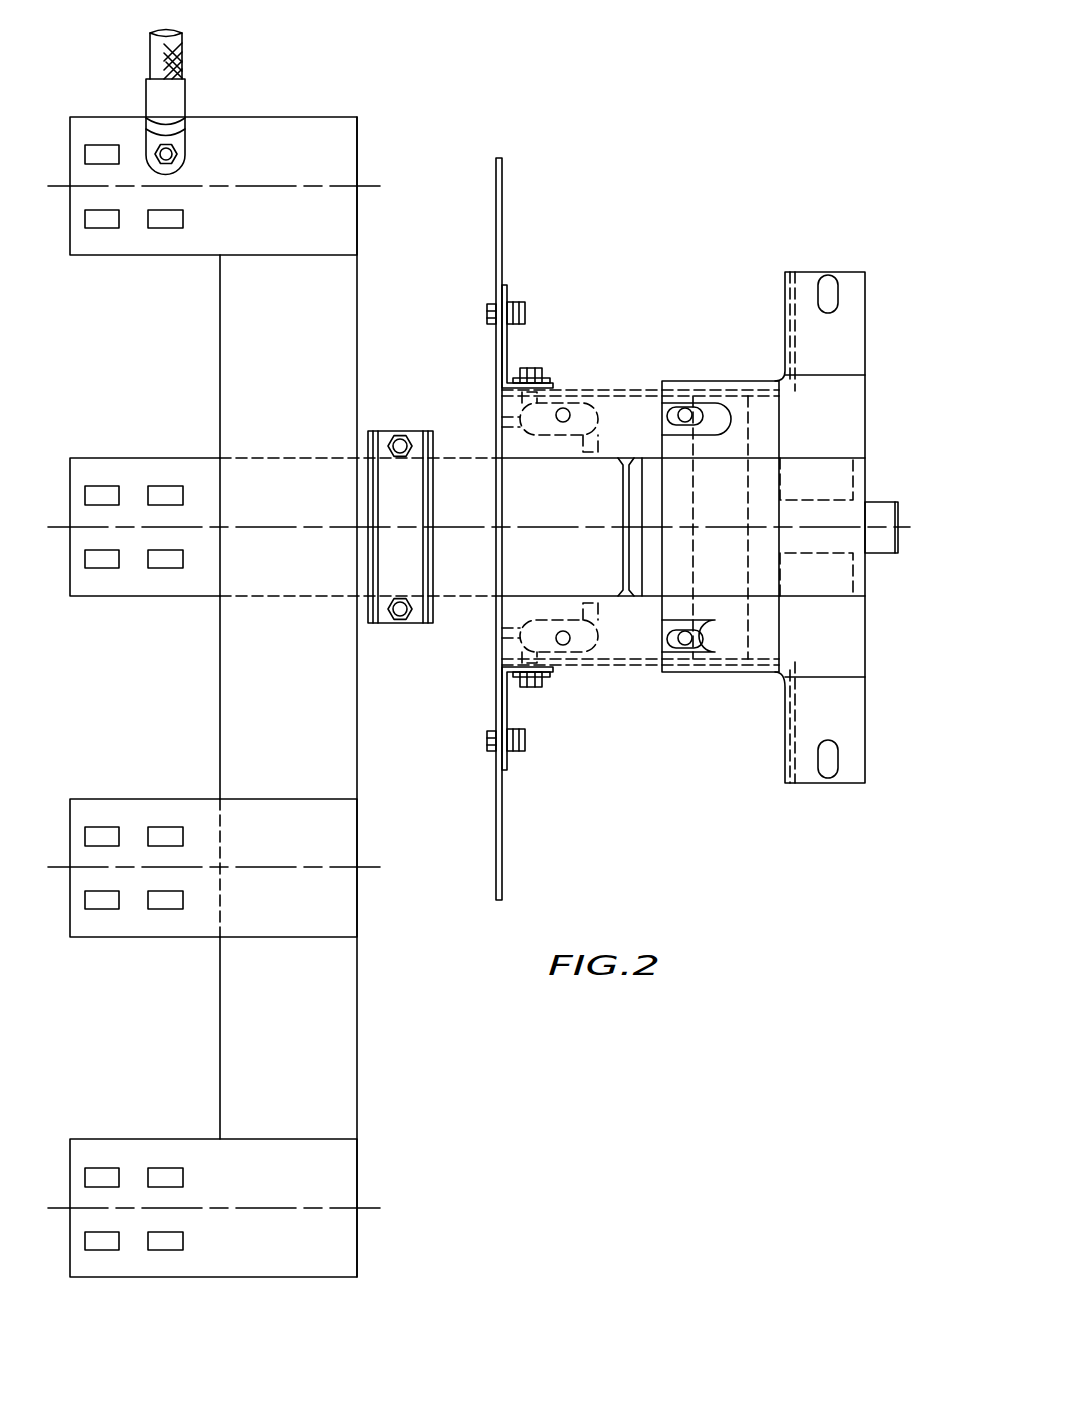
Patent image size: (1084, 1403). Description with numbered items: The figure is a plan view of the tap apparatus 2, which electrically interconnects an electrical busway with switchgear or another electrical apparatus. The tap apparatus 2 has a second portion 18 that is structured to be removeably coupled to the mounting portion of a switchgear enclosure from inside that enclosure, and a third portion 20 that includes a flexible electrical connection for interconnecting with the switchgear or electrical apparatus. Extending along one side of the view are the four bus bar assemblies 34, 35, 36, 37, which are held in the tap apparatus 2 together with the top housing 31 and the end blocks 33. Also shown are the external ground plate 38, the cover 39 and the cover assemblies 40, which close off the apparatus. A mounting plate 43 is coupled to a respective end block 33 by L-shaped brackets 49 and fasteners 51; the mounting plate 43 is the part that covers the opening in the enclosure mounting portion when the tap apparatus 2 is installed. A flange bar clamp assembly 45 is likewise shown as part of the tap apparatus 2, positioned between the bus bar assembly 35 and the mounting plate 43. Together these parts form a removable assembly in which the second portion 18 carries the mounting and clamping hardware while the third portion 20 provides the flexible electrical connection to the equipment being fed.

The tap apparatus 2 is at (671, 198).
The second portion 18 is at (478, 655).
The third portion 20 is at (103, 82).
The top housing 31 is at (603, 648).
The end blocks 33 is at (578, 435).
The bus bar assembly 34 is at (167, 245).
The bus bar assembly 35 is at (167, 587).
The bus bar assembly 36 is at (167, 927).
The bus bar assembly 37 is at (167, 1267).
The external ground plate 38 is at (883, 545).
The cover 39 is at (858, 477).
The cover assembly 40 is at (850, 342).
The mounting plate 43 is at (493, 207).
The flange bar clamp assembly 45 is at (409, 403).
The L-shaped bracket 49 is at (506, 342).
The fastener 51 is at (519, 372).